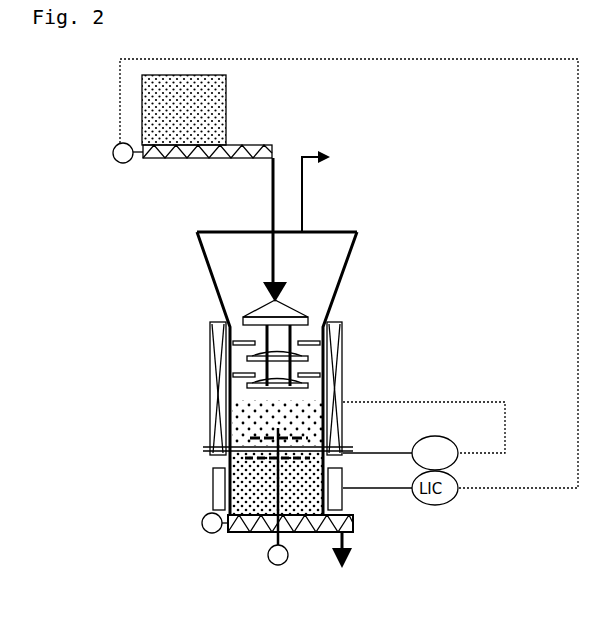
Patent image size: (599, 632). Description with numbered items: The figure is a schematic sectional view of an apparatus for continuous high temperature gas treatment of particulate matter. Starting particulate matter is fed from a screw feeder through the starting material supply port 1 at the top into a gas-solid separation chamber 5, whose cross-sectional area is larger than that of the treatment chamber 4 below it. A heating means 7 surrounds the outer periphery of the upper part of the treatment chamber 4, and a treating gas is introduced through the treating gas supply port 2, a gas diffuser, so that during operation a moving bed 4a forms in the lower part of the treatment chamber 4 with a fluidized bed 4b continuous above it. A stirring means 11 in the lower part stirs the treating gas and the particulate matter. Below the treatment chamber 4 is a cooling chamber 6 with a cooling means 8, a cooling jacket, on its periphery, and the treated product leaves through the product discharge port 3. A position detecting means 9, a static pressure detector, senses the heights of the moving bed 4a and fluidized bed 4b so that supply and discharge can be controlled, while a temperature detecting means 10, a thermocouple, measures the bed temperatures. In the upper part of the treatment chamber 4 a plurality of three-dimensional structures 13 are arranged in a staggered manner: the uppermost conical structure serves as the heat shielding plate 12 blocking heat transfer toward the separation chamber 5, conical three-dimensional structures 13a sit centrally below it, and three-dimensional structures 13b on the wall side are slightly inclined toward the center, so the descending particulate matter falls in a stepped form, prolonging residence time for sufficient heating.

The starting material supply port 1 is at (221, 179).
The treating gas supply port 2 is at (196, 447).
The product discharge port 3 is at (342, 562).
The treatment chamber 4 is at (185, 457).
The moving bed 4a is at (236, 462).
The fluidized bed 4b is at (256, 421).
The gas-solid separation chamber 5 is at (277, 374).
The cooling chamber 6 is at (256, 498).
The heating means 7 is at (263, 388).
The cooling means 8 is at (346, 490).
The position detecting means 9 is at (463, 507).
The temperature detecting means 10 is at (424, 436).
The stirring means 11 is at (302, 428).
The heat shielding plate 12 is at (277, 303).
The three-dimensional structures 13 is at (361, 343).
The conical three-dimensional structures 13a is at (308, 384).
The three-dimensional structures on the wall surface side 13b is at (322, 342).